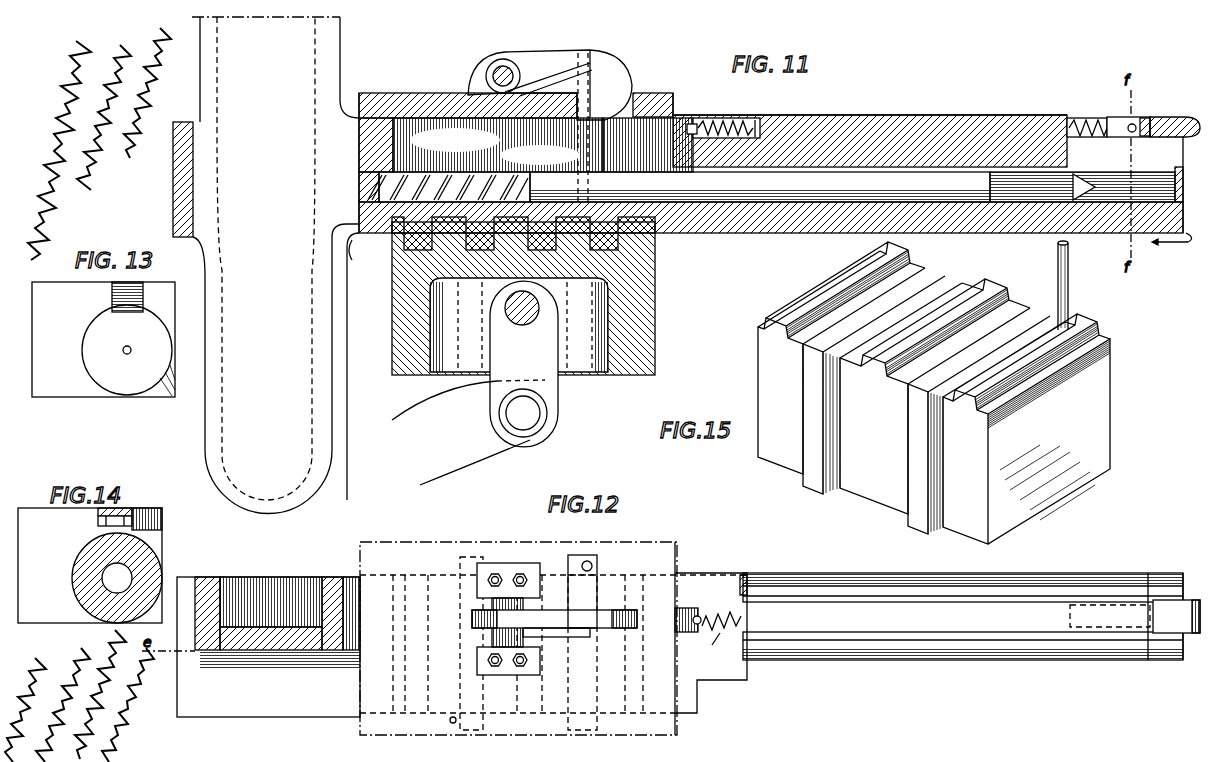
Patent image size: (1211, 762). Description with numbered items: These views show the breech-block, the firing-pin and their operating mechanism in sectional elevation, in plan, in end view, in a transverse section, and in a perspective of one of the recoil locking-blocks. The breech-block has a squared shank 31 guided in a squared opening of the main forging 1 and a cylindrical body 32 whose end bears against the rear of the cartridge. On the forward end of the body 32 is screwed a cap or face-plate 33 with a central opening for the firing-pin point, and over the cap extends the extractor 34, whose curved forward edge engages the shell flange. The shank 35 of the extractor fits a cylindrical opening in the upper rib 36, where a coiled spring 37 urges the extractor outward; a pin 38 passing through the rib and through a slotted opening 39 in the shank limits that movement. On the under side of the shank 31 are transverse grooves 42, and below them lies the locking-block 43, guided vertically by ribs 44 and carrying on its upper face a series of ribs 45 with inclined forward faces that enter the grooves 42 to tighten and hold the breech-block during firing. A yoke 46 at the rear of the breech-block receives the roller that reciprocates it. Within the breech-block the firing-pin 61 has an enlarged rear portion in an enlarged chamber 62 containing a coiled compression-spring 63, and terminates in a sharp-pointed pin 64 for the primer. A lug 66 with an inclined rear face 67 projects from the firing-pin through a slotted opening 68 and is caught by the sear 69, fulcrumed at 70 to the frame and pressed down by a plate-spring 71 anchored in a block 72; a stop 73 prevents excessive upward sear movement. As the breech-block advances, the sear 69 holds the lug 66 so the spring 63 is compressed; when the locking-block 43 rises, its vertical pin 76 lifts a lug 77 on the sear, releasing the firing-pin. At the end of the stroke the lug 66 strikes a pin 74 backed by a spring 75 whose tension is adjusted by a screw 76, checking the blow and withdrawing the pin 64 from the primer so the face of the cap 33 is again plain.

In FIG. 11, the main forging 1 is at (372, 92).
In FIG. 12, the main forging 1 is at (553, 638).
In FIG. 11, the squared shank 31 is at (173, 195).
In FIG. 13, the squared shank 31 is at (103, 339).
In FIG. 14, the squared shank 31 is at (90, 565).
In FIG. 12, the squared shank 31 is at (462, 645).
In FIG. 14, the cylindrical body 32 is at (75, 598).
In FIG. 12, the cylindrical body 32 is at (853, 573).
In FIG. 11, the cap or face-plate 33 is at (1172, 252).
In FIG. 13, the cap or face-plate 33 is at (128, 350).
In FIG. 12, the cap or face-plate 33 is at (1163, 573).
In FIG. 11, the extractor 34 is at (1178, 117).
In FIG. 13, the extractor 34 is at (112, 295).
In FIG. 12, the extractor 34 is at (1176, 616).
In FIG. 11, the shank of the extractor 35 is at (1145, 118).
In FIG. 14, the shank of the extractor 35 is at (98, 521).
In FIG. 12, the upper rib 36 is at (963, 635).
In FIG. 11, the coiled spring 37 is at (1088, 118).
In FIG. 11, the pin 38 is at (1127, 124).
In FIG. 14, the pin 38 is at (147, 520).
In FIG. 11, the slotted opening 39 is at (1134, 124).
In FIG. 11, the transverse grooves 42 is at (361, 250).
In FIG. 11, the locking-block 43 is at (602, 374).
In FIG. 15, the locking-block 43 is at (1048, 515).
In FIG. 12, the ribs 44 is at (462, 730).
In FIG. 15, the ribs 44 is at (806, 488).
In FIG. 15, the ribs 45 is at (792, 307).
In FIG. 11, the yoke 46 is at (282, 265).
In FIG. 12, the yoke 46 is at (267, 577).
In FIG. 11, the firing-pin 61 is at (760, 187).
In FIG. 11, the enlarged chamber 62 is at (442, 172).
In FIG. 11, the coiled compression-spring 63 is at (508, 172).
In FIG. 11, the sharp-pointed pin 64 is at (1090, 188).
In FIG. 11, the lug 66 is at (604, 155).
In FIG. 11, the inclined rear face 67 is at (583, 118).
In FIG. 11, the slotted opening 68 is at (680, 118).
In FIG. 11, the sear 69 is at (545, 50).
In FIG. 12, the sear 69 is at (608, 628).
In FIG. 11, the fulcrum 70 is at (502, 60).
In FIG. 12, the fulcrum 70 is at (477, 596).
In FIG. 11, the plate-spring 71 is at (550, 78).
In FIG. 12, the plate-spring 71 is at (556, 637).
In FIG. 11, the block 72 is at (598, 62).
In FIG. 12, the block 72 is at (582, 640).
In FIG. 11, the stop 73 is at (470, 88).
In FIG. 12, the stop 73 is at (472, 620).
In FIG. 11, the pin 74 is at (690, 134).
In FIG. 12, the pin 74 is at (702, 617).
In FIG. 11, the spring 75 is at (727, 120).
In FIG. 12, the spring 75 is at (733, 619).
In FIG. 11, the screw / vertical pin 76 is at (757, 124).
In FIG. 12, the screw / vertical pin 76 is at (600, 566).
In FIG. 15, the screw / vertical pin 76 is at (1069, 270).
In FIG. 12, the lug 77 is at (597, 590).